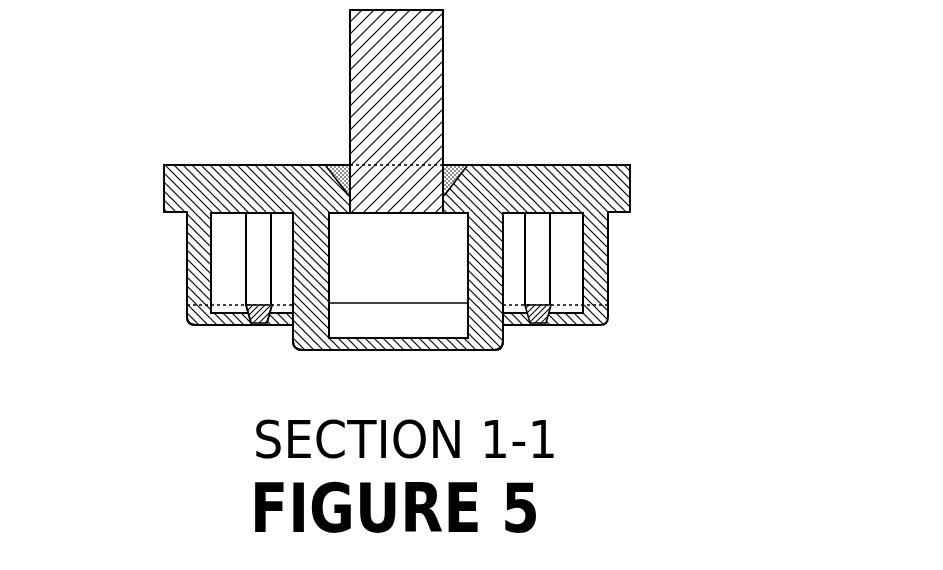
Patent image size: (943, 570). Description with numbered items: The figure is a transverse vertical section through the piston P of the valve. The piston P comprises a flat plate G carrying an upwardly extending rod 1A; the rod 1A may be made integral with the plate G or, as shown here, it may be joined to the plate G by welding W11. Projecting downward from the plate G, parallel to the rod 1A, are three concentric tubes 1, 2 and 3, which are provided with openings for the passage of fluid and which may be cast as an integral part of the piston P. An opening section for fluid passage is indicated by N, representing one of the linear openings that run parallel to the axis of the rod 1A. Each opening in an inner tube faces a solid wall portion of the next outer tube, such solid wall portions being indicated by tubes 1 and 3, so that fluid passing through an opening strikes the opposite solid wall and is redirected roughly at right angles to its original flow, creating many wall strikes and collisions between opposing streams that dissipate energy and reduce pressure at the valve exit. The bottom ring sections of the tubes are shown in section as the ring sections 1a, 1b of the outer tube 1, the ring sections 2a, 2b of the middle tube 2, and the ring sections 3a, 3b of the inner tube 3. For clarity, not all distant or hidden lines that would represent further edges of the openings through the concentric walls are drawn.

The concentric tube 1 is at (195, 282).
The bottom ring section of tube 1 1a is at (217, 318).
The bottom ring section of tube 1 1b is at (227, 327).
The rod 1A is at (396, 112).
The concentric tube 2 is at (257, 265).
The bottom ring section of tube 2 2a is at (270, 327).
The bottom ring section of tube 2 2b is at (278, 330).
The concentric tube 3 is at (315, 265).
The bottom ring section of tube 3 3a is at (422, 352).
The bottom ring section of tube 3 3b is at (447, 303).
The piston P is at (257, 177).
The welding W11 is at (337, 180).
The plate G is at (537, 178).
The linear opening N is at (537, 265).